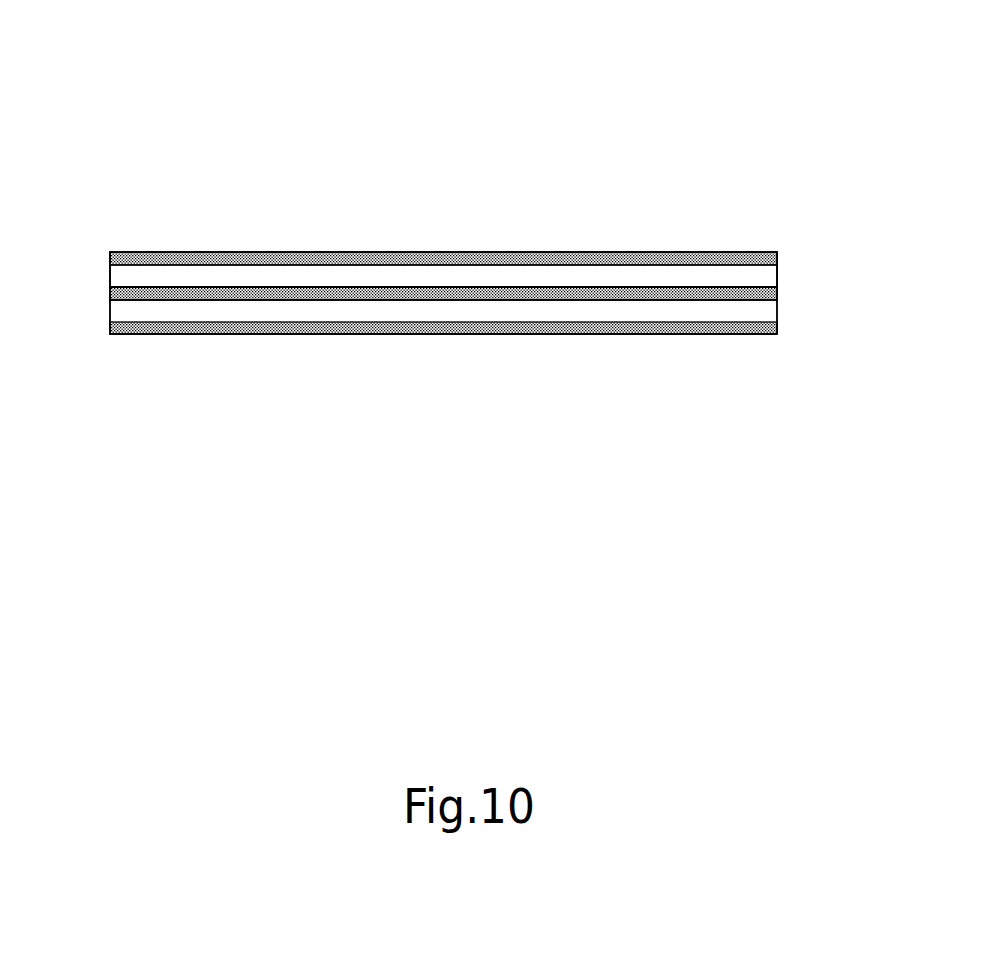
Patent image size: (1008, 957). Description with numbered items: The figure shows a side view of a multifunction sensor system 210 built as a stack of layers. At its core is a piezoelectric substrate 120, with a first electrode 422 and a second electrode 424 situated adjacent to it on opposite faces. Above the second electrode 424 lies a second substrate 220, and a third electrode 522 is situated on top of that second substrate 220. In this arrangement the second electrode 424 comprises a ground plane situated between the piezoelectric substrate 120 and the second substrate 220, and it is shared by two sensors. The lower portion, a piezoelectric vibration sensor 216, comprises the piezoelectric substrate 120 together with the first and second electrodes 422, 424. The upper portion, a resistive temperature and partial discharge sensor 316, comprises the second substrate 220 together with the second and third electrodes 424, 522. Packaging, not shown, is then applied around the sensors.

The multifunction sensor system 210 is at (230, 110).
The second substrate 220 is at (343, 273).
The third electrode 522 is at (255, 252).
The second electrode 424 is at (438, 287).
The piezoelectric substrate 120 is at (757, 303).
The first electrode 422 is at (780, 324).
The resistive temperature and partial discharge sensor 316 is at (97, 255).
The piezoelectric vibration sensor 216 is at (97, 302).